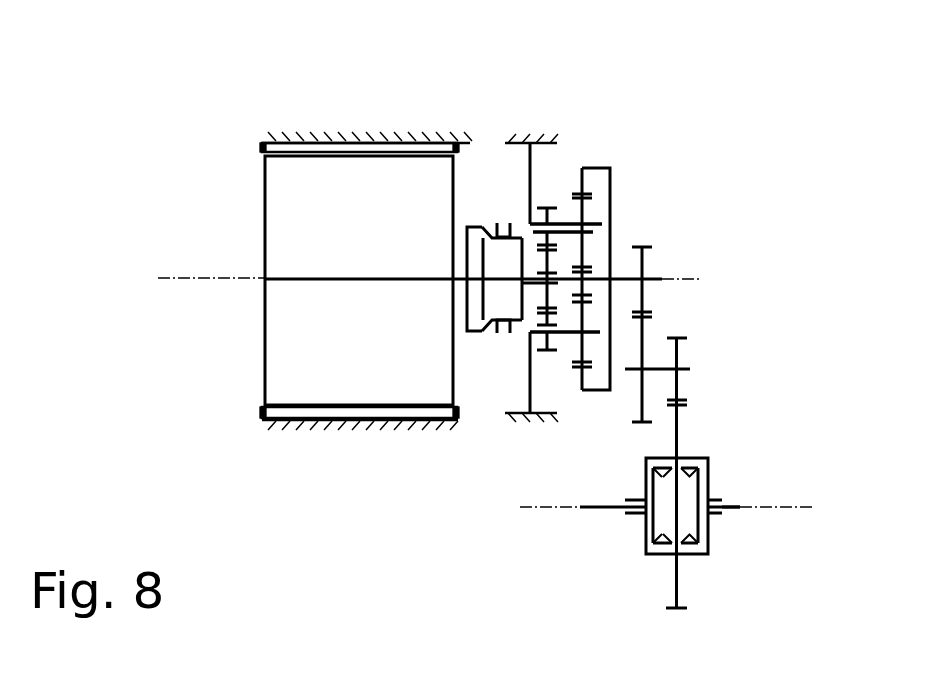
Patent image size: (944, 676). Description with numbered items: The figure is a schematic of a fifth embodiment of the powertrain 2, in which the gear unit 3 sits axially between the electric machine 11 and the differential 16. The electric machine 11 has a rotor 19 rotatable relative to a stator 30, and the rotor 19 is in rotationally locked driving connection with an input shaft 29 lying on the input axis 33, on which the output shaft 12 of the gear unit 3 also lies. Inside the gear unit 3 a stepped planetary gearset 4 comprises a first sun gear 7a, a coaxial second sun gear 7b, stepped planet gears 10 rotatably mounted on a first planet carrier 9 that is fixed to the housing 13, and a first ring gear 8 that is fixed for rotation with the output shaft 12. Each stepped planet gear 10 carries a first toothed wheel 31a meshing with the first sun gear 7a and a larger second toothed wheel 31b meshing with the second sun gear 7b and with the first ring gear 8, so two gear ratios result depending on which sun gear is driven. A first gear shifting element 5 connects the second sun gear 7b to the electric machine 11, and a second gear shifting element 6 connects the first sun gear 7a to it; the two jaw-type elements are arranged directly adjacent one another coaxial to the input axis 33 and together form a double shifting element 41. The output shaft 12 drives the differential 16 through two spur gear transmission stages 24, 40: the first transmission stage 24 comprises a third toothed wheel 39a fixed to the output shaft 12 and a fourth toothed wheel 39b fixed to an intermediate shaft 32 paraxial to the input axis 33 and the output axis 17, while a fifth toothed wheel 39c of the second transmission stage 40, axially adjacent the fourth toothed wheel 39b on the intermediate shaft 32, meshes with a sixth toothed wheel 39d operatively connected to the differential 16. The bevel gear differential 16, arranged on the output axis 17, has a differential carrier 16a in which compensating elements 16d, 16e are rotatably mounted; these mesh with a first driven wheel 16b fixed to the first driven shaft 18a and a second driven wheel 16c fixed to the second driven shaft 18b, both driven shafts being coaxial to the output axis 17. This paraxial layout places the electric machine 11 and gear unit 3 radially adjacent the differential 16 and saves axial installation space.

The powertrain 2 is at (741, 129).
The gear unit 3 is at (640, 153).
The stepped planetary gearset 4 is at (562, 165).
The first gear shifting element 5 is at (468, 205).
The second gear shifting element 6 is at (513, 213).
The first sun gear 7a is at (550, 300).
The second sun gear 7b is at (583, 290).
The first ring gear 8 is at (587, 167).
The first planet carrier 9 is at (603, 225).
The stepped planet gear 10 is at (561, 338).
The electric machine 11 is at (354, 446).
The output shaft 12 is at (627, 277).
The housing 13 is at (529, 140).
The differential 16 is at (732, 558).
The differential carrier 16a is at (652, 556).
The first driven wheel 16b is at (650, 525).
The second driven wheel 16c is at (699, 527).
The compensating element 16d is at (692, 467).
The compensating element 16e is at (688, 548).
The output axis 17 is at (784, 505).
The first driven shaft 18a is at (590, 508).
The second driven shaft 18b is at (748, 505).
The rotor 19 is at (277, 337).
The first transmission stage 24 is at (670, 292).
The input shaft 29 is at (457, 282).
The stator 30 is at (298, 415).
The first toothed wheel 31a is at (543, 203).
The second toothed wheel 31b is at (573, 203).
The intermediate shaft 32 is at (690, 368).
The input axis 33 is at (182, 277).
The third toothed wheel 39a is at (643, 262).
The fourth toothed wheel 39b is at (640, 422).
The fifth toothed wheel 39c is at (677, 352).
The sixth toothed wheel 39d is at (677, 427).
The second transmission stage 40 is at (720, 402).
The double shifting element 41 is at (496, 205).